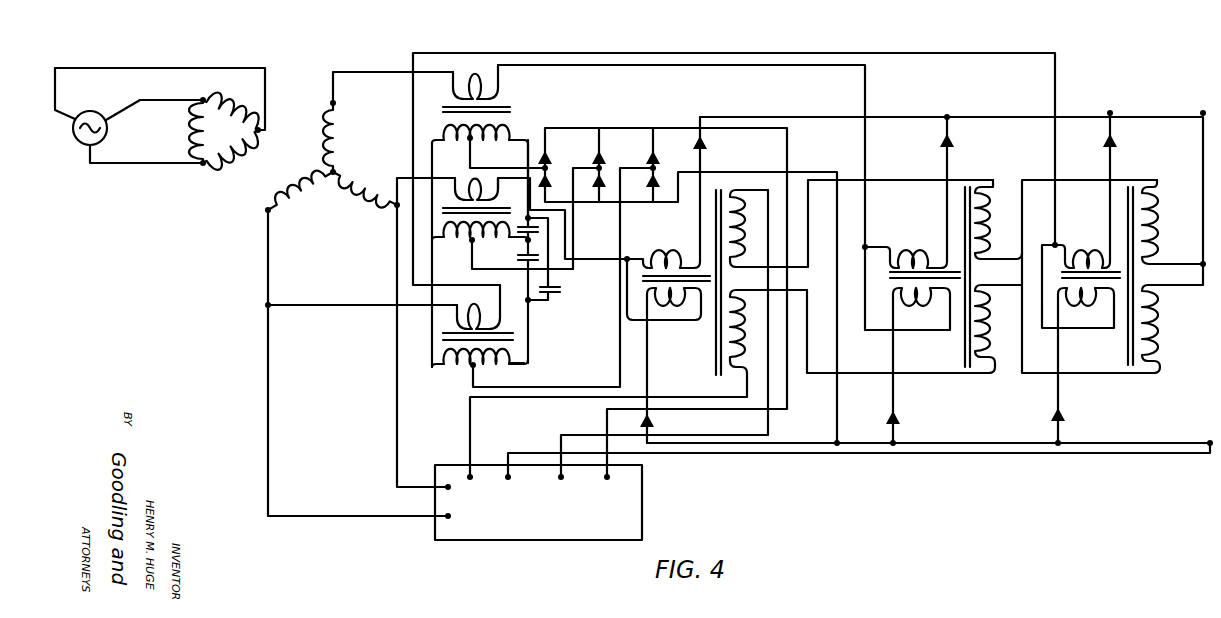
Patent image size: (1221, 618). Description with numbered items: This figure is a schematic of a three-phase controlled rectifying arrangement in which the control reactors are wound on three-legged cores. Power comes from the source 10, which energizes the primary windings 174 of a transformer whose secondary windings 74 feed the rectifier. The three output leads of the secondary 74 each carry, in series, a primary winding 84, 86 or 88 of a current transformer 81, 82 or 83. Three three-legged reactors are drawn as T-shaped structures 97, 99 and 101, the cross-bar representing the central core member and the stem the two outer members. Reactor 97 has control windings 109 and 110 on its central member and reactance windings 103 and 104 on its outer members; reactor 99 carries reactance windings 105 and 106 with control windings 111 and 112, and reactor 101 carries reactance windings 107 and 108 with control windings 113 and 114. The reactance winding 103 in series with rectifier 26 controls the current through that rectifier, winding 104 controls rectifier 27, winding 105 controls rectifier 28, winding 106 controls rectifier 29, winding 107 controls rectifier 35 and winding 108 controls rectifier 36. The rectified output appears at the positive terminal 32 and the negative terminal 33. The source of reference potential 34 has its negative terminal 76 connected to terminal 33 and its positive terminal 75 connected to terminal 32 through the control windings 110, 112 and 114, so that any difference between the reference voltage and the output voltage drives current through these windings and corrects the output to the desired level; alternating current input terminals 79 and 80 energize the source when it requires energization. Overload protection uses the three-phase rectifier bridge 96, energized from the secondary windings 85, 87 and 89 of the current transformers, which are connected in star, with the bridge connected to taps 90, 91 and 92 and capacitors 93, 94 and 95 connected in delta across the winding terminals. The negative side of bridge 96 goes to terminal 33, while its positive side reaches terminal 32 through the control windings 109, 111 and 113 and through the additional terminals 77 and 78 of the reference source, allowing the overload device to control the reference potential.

The source 10 is at (107, 131).
The primary windings 174 is at (229, 97).
The secondary windings 74 is at (316, 153).
The primary winding 84 is at (488, 77).
The current transformer 81 is at (443, 125).
The secondary winding 85 is at (516, 124).
The tap 90 is at (468, 148).
The current transformer 82 is at (440, 186).
The primary winding 86 is at (500, 192).
The tap 91 is at (460, 245).
The secondary winding 87 is at (474, 243).
The capacitor 93 is at (536, 191).
The capacitor 94 is at (536, 301).
The capacitor 95 is at (561, 294).
The primary winding 88 is at (486, 301).
The current transformer 83 is at (452, 325).
The secondary winding 89 is at (493, 368).
The tap 92 is at (470, 368).
The three-phase rectifier bridge 96 is at (600, 121).
The rectifier 26 is at (704, 144).
The rectifier 27 is at (655, 423).
The rectifier 28 is at (952, 142).
The rectifier 29 is at (899, 418).
The rectifier 35 is at (1116, 140).
The rectifier 36 is at (1064, 413).
The reactance winding 103 is at (686, 248).
The reactance winding 104 is at (683, 322).
The three-legged reactor 97 is at (715, 373).
The control winding 109 is at (765, 190).
The control winding 110 is at (744, 366).
The reactance winding 105 is at (925, 246).
The reactance winding 106 is at (933, 303).
The three-legged reactor 99 is at (958, 347).
The control winding 111 is at (992, 228).
The control winding 112 is at (999, 338).
The reactance winding 107 is at (1091, 243).
The reactance winding 108 is at (1100, 307).
The three-legged reactor 101 is at (1131, 365).
The control winding 113 is at (1160, 222).
The control winding 114 is at (1162, 330).
The positive terminal 32 is at (1189, 117).
The negative terminal 33 is at (1210, 443).
The source of reference potential 34 is at (642, 530).
The positive terminal 75 is at (470, 477).
The negative terminal 76 is at (508, 477).
The terminal 77 is at (561, 477).
The terminal 78 is at (607, 477).
The alternating current input terminal 79 is at (436, 486).
The alternating current input terminal 80 is at (436, 515).